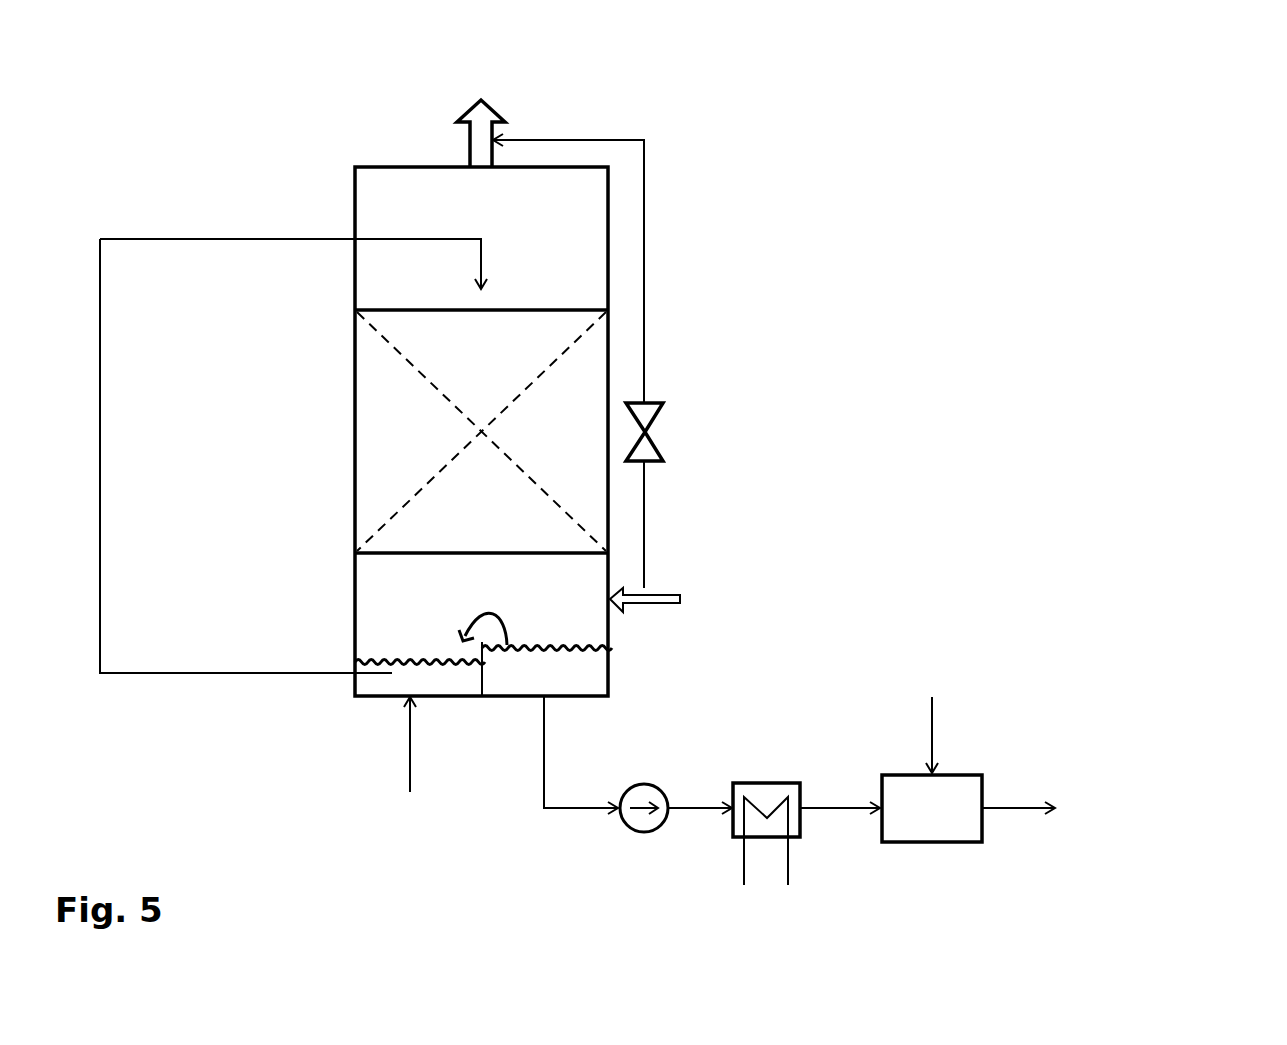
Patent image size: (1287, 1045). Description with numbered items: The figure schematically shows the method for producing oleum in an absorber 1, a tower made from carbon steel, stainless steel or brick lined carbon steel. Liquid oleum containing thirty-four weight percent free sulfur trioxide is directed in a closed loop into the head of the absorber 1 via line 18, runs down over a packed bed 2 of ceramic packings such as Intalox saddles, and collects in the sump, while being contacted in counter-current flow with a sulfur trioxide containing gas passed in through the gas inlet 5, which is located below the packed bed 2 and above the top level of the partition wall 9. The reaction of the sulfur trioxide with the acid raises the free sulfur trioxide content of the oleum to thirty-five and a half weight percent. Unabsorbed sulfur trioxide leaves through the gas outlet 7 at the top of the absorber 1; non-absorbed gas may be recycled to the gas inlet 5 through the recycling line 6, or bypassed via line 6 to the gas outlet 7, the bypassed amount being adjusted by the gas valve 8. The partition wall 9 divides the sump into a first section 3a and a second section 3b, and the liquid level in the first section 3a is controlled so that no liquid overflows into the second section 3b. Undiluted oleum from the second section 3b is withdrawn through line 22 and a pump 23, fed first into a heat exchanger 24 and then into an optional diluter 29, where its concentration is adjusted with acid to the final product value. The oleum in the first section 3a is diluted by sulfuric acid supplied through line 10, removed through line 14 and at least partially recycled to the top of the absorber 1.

The absorber 1 is at (633, 338).
The packed bed 2 is at (481, 431).
The first section 3a is at (377, 689).
The second section 3b is at (605, 678).
The gas inlet 5 is at (648, 610).
The recycling line 6 is at (662, 182).
The gas outlet 7 is at (473, 139).
The gas valve 8 is at (662, 432).
The partition wall 9 is at (478, 665).
The line 10 is at (410, 752).
The line 14 is at (207, 673).
The line 18 is at (208, 242).
The line 22 is at (544, 758).
The pump 23 is at (645, 783).
The heat exchanger 24 is at (768, 781).
The diluter 29 is at (972, 773).